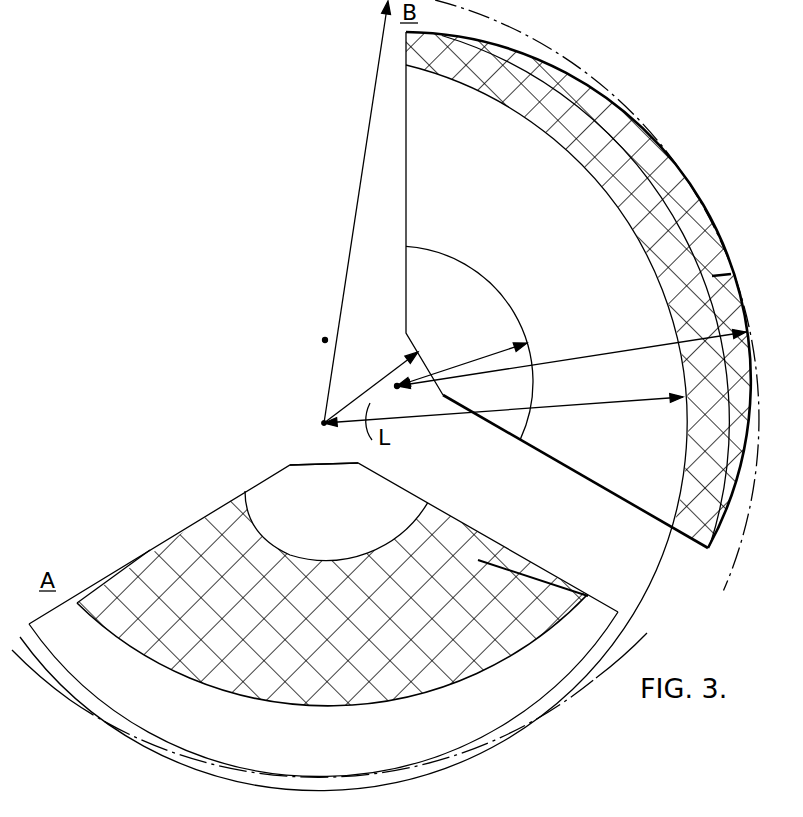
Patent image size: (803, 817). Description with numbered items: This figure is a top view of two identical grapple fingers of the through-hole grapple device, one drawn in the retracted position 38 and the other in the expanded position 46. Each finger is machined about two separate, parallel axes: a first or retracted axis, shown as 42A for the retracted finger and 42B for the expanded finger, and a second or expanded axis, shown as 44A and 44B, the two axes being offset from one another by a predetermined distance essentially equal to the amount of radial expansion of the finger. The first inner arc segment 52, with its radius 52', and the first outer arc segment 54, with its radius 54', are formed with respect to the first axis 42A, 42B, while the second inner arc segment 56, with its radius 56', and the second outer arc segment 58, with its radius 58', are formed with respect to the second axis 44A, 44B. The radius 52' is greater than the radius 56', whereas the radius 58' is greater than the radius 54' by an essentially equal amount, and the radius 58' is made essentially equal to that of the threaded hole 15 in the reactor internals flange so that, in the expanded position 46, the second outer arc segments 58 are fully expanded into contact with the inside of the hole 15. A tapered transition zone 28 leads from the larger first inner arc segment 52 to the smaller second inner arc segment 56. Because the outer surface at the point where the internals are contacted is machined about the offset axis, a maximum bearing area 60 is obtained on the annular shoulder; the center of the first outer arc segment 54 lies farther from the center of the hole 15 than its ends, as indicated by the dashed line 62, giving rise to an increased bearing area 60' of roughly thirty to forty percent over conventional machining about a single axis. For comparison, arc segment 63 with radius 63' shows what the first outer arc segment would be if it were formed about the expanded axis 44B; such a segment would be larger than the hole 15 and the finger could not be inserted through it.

The threaded hole 15 is at (513, 733).
The tapered transition zone 28 is at (329, 529).
The retracted position 38 is at (140, 547).
The first axis 42A is at (320, 420).
The first axis 42B is at (400, 388).
The second axis 44A is at (325, 340).
The second axis 44B is at (318, 424).
The expanded position 46 is at (649, 89).
The first inner arc segment 52 is at (224, 483).
The radius of the first inner arc segment 52' is at (462, 353).
The first outer arc segment 54 is at (549, 662).
The radius of the first outer arc segment 54' is at (571, 350).
The second inner arc segment 56 is at (329, 447).
The radius of the second inner arc segment 56' is at (371, 385).
The second outer arc segment 58 is at (576, 573).
The radius of the second outer arc segment 58' is at (503, 411).
The bearing area 60 is at (414, 396).
The increased bearing area 60' is at (608, 291).
The dashed line 62 is at (712, 276).
The arc segment 63 is at (329, 705).
The radius of arc segment 63' is at (345, 212).